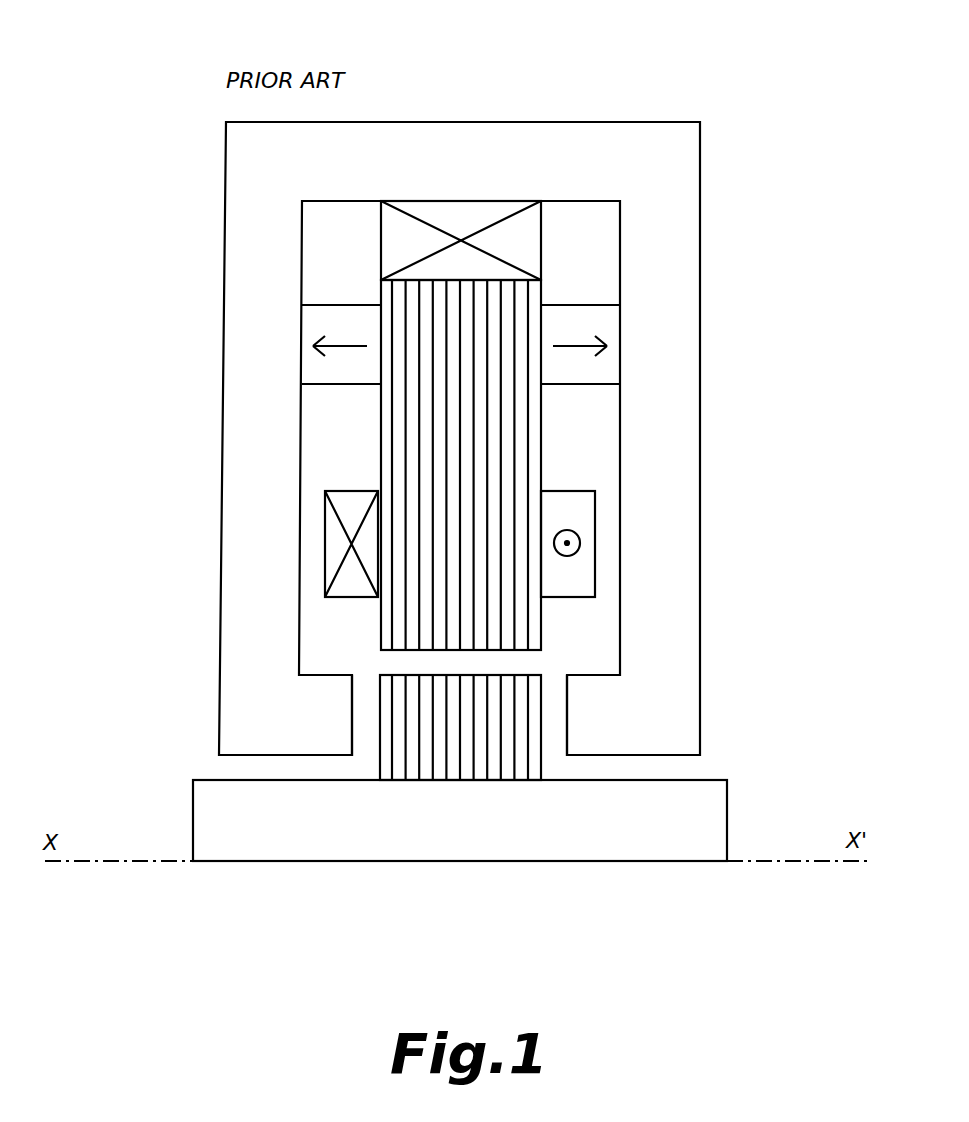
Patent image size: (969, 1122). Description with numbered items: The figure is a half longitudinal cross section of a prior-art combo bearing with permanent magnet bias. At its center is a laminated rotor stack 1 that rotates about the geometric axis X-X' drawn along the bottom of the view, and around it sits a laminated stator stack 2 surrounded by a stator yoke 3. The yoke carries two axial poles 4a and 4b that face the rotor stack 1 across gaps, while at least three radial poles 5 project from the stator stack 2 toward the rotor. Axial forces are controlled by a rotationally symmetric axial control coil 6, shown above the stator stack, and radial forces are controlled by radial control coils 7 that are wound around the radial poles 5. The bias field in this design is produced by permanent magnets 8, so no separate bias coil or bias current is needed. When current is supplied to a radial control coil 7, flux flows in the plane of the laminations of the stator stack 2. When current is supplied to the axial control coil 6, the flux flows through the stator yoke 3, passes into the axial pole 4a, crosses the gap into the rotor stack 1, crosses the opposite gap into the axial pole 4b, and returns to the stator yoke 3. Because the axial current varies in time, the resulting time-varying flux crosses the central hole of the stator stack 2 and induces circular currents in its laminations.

The laminated rotor stack 1 is at (477, 757).
The laminated stator stack 2 is at (493, 424).
The stator yoke 3 is at (650, 708).
The axial pole 4a is at (347, 762).
The axial pole 4b is at (572, 762).
The radial pole 5 is at (541, 624).
The axial control coil 6 is at (483, 224).
The radial control coil 7 is at (350, 520).
The permanent magnet 8 is at (576, 322).